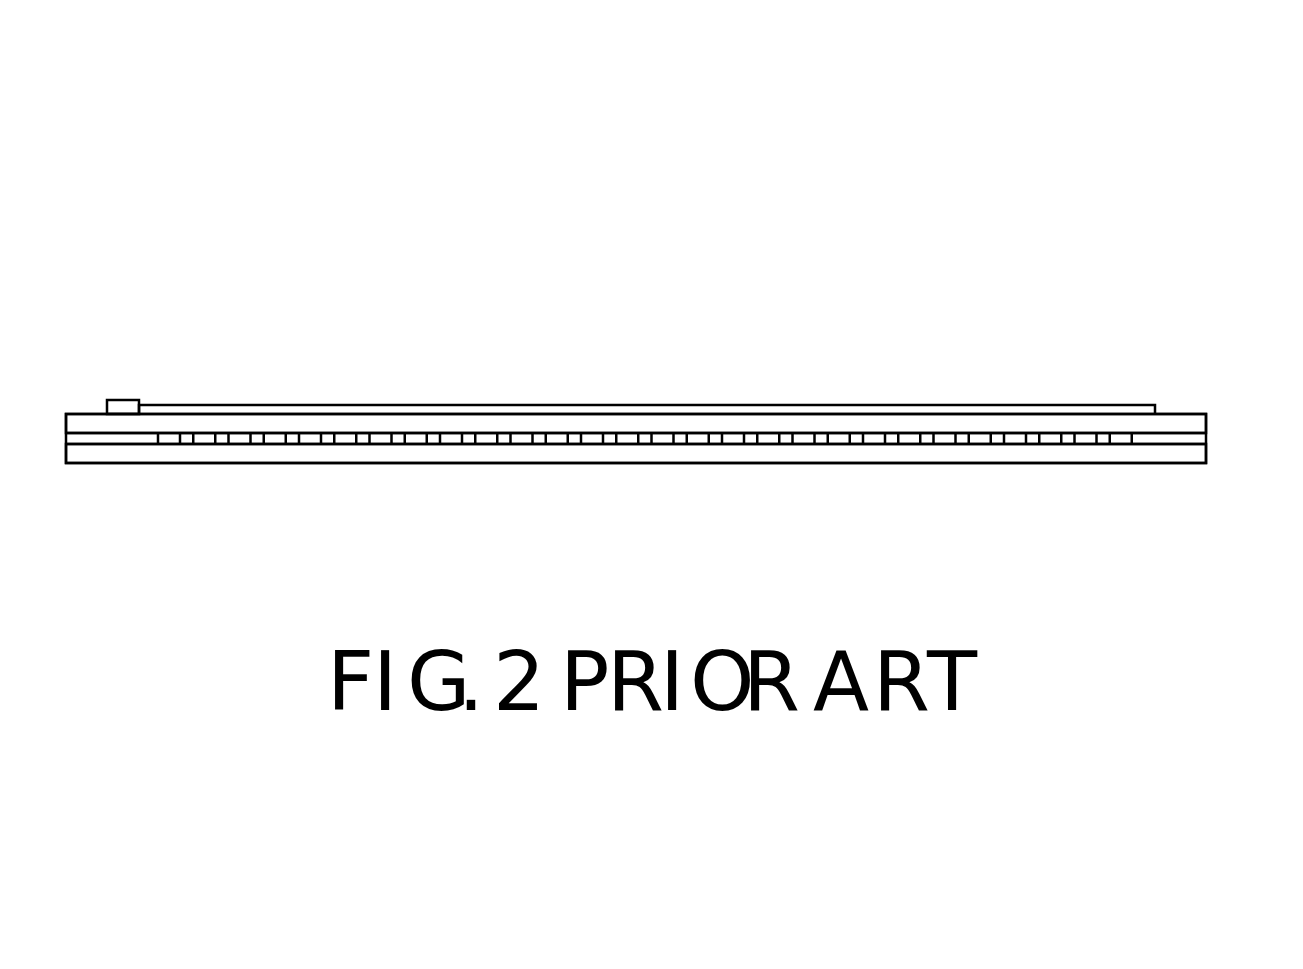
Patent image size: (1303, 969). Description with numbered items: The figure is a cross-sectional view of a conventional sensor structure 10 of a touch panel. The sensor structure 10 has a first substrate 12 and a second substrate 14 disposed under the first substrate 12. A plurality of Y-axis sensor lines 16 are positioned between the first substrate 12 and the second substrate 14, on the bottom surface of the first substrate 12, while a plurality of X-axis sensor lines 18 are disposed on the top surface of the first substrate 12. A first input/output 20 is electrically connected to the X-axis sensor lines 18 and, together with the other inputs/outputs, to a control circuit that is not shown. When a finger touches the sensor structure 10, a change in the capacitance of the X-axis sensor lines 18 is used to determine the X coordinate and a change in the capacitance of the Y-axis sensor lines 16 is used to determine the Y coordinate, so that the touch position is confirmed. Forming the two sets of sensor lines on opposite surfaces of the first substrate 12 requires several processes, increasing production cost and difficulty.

The sensor structure 10 is at (1112, 146).
The first substrate 12 is at (1183, 420).
The second substrate 14 is at (1183, 455).
The Y-axis sensor lines 16 is at (383, 437).
The X-axis sensor lines 18 is at (614, 407).
The first inputs/outputs 20 is at (122, 403).